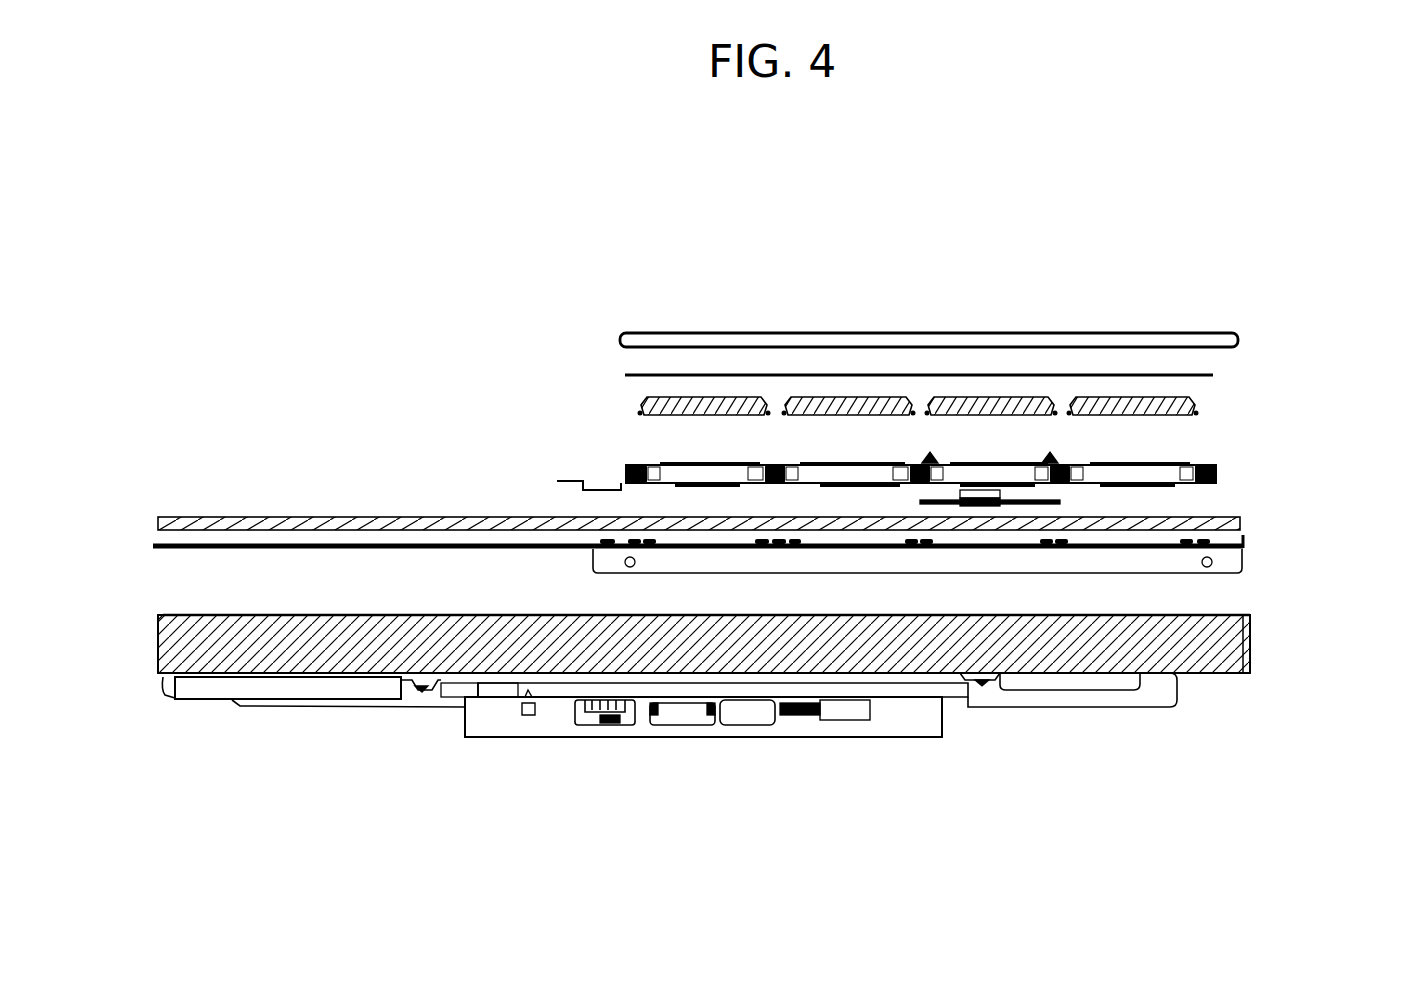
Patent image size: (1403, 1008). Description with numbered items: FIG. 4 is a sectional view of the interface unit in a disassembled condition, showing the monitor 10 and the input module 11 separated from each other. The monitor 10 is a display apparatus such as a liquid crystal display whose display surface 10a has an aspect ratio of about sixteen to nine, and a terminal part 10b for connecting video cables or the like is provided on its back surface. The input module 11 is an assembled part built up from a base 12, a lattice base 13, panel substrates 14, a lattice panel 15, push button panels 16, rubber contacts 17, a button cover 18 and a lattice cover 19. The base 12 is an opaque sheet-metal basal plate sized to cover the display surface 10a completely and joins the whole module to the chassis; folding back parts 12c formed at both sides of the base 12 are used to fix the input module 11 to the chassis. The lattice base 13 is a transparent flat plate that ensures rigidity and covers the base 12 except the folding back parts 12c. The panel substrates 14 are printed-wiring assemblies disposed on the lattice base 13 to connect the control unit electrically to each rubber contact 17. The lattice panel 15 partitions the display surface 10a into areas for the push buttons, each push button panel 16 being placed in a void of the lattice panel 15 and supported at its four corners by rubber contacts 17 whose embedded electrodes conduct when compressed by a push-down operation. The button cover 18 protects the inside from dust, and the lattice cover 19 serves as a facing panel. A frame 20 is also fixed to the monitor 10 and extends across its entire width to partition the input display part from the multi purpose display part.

The monitor 10 is at (1228, 668).
The display surface 10a is at (1180, 615).
The terminal part 10b is at (680, 725).
The input module 11 is at (1328, 382).
The base 12 is at (1245, 545).
The folding back part 12c is at (1233, 558).
The lattice base 13 is at (1222, 517).
The panel substrate 14 is at (1062, 500).
The lattice panel 15 is at (1217, 475).
The push button panel 16 is at (1196, 397).
The rubber contact 17 is at (1050, 455).
The button cover 18 is at (1200, 375).
The lattice cover 19 is at (1160, 333).
The frame 20 is at (582, 480).